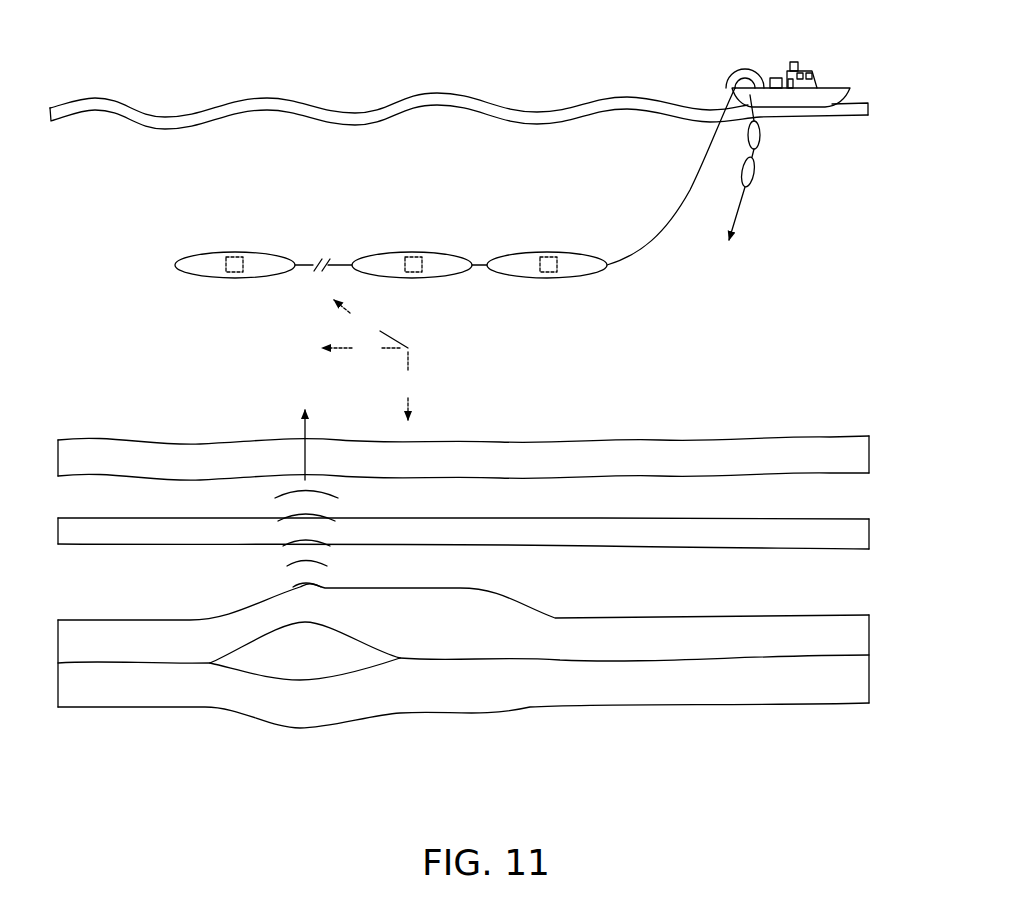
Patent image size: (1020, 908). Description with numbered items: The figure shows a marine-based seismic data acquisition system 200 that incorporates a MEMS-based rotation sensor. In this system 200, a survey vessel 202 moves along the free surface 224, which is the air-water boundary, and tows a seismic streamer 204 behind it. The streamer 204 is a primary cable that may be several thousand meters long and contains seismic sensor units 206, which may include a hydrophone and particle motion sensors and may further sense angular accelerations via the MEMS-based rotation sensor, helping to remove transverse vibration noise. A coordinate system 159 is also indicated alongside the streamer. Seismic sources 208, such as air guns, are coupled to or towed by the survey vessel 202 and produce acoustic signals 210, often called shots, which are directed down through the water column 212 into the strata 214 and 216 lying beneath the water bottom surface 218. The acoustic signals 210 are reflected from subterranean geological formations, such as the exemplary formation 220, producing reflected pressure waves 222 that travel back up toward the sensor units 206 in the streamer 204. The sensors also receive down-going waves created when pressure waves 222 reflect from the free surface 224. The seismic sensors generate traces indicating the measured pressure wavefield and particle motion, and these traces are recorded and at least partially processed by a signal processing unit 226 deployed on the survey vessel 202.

The coordinate system 159 is at (416, 336).
The marine-based seismic data acquisition system 200 is at (263, 90).
The survey vessel 202 is at (843, 80).
The seismic streamer 204 is at (698, 178).
The seismic sensor unit 206 is at (247, 252).
The seismic source 208 is at (763, 135).
The acoustic signal 210 is at (742, 212).
The water column 212 is at (814, 330).
The strata 214 is at (463, 622).
The strata 216 is at (467, 703).
The water bottom surface 218 is at (752, 437).
The formation 220 is at (302, 670).
The pressure waves 222 is at (270, 572).
The free surface 224 is at (408, 93).
The signal processing unit 226 is at (774, 78).